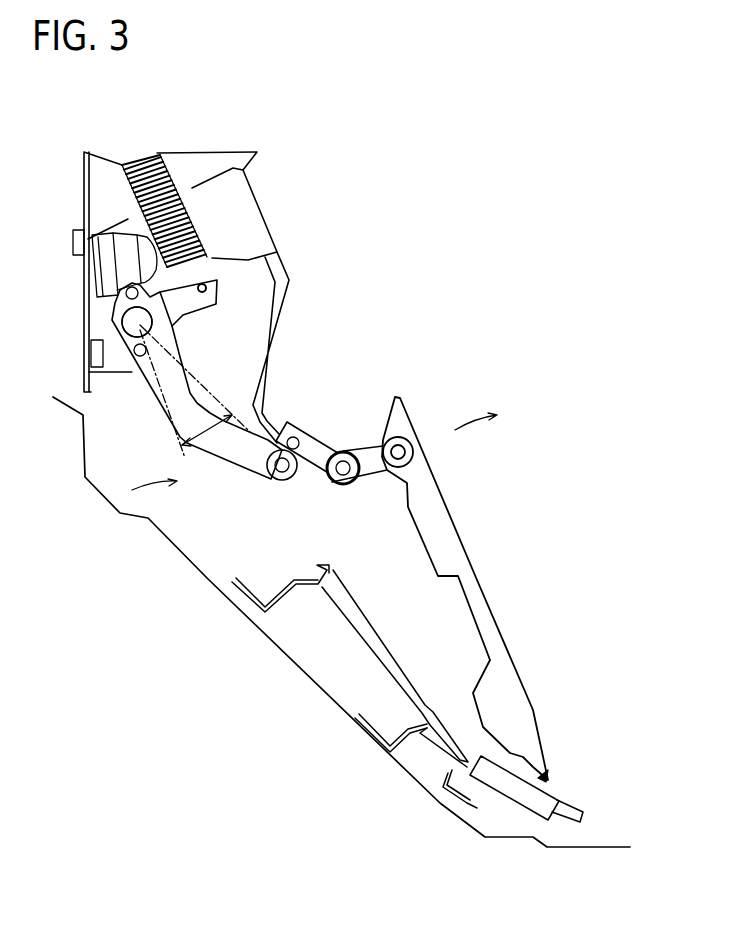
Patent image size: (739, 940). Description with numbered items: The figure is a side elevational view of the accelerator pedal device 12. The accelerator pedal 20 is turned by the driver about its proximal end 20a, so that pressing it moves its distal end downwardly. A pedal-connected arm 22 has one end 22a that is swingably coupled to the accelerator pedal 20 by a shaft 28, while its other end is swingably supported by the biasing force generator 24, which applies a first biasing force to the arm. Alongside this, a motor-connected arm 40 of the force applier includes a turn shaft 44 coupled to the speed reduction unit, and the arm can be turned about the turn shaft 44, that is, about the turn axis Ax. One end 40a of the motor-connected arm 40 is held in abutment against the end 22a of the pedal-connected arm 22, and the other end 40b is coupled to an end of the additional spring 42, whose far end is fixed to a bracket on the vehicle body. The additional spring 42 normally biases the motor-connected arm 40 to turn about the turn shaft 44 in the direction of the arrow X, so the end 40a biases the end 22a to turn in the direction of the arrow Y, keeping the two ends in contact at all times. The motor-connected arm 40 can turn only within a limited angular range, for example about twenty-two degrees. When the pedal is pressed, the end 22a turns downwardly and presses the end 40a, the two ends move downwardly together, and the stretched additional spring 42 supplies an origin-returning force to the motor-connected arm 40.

The accelerator pedal device 12 is at (461, 308).
The accelerator pedal 20 is at (440, 485).
The proximal end 20a is at (548, 776).
The pedal-connected arm 22 is at (283, 297).
The end 22a is at (318, 466).
The biasing force generator 24 is at (248, 208).
The shaft 28 is at (341, 451).
The motor-connected arm 40 is at (145, 388).
The end 40a is at (280, 478).
The end 40b is at (207, 303).
The additional spring 42 is at (170, 157).
The turn shaft 44 is at (123, 317).
The turn axis Ax is at (137, 322).
The arrow X is at (143, 491).
The arrow Y is at (487, 416).